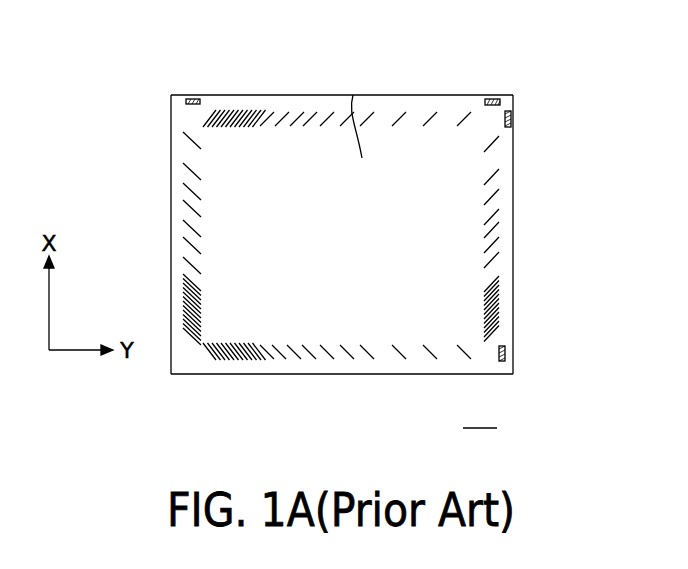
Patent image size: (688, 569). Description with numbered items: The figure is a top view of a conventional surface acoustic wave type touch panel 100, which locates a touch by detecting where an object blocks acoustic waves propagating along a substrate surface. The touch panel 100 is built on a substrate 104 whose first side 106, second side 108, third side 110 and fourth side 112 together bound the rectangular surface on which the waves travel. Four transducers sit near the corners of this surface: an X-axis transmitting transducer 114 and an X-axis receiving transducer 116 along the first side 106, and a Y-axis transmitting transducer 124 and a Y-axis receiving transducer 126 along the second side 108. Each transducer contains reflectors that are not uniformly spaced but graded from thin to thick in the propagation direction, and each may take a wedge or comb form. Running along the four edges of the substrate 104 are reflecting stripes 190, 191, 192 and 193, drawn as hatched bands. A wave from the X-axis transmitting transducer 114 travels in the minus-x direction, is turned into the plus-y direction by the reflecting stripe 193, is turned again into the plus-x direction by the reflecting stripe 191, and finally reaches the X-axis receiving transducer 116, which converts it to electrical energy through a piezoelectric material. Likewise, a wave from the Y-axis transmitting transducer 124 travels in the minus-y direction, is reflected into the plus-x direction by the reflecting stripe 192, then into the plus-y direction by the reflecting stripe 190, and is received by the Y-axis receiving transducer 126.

The touch panel 100 is at (480, 417).
The substrate 104 is at (353, 95).
The first side 106 is at (513, 233).
The second side 108 is at (307, 95).
The third side 110 is at (171, 228).
The fourth side 112 is at (339, 376).
The X-axis transmitting transducer 114 is at (505, 351).
The X-axis receiving transducer 116 is at (511, 117).
The Y-axis transmitting transducer 124 is at (188, 97).
The Y-axis receiving transducer 126 is at (492, 98).
The reflecting stripe 190 is at (470, 239).
The reflecting stripe 191 is at (337, 134).
The reflecting stripe 192 is at (211, 238).
The reflecting stripe 193 is at (337, 337).